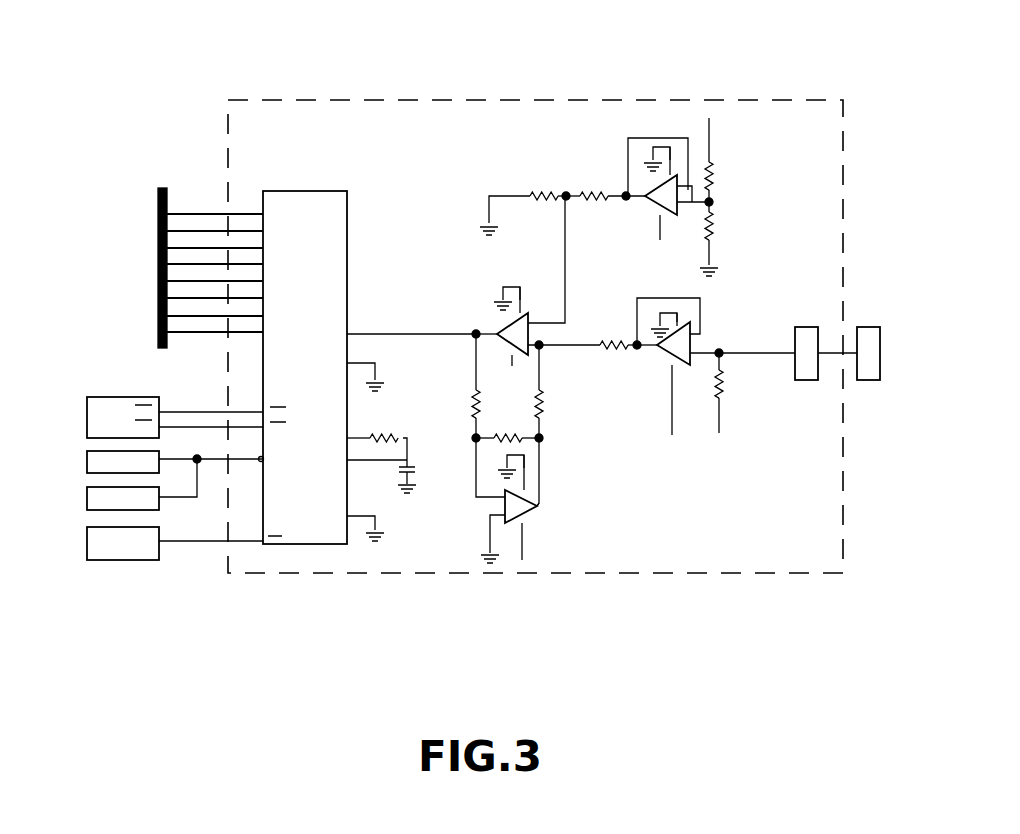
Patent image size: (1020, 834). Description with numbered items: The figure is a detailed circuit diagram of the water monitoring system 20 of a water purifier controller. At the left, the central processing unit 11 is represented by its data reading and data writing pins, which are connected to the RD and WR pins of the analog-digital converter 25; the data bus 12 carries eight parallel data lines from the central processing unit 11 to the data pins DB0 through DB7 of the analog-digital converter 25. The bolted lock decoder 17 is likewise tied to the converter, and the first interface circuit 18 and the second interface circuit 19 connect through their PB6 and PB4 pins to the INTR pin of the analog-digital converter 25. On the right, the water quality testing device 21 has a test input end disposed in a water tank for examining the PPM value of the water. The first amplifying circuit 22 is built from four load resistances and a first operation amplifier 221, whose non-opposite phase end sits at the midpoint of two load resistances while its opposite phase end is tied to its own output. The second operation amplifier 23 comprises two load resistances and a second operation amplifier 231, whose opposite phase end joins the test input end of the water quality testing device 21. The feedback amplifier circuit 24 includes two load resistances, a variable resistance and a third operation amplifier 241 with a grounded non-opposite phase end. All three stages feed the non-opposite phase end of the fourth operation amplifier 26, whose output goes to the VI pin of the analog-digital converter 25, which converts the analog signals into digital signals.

The central processing unit 11 is at (92, 412).
The data bus 12 is at (158, 196).
The bolted lock decoder 17 is at (100, 555).
The first interface circuit 18 is at (95, 458).
The second interface circuit 19 is at (92, 500).
The water monitoring system 20 is at (748, 100).
The water quality testing device 21 is at (806, 326).
The first amplifying circuit 22 is at (662, 118).
The second operation amplifier 23 is at (718, 300).
The feedback amplifier circuit 24 is at (566, 484).
The analog-digital converter 25 is at (313, 544).
The fourth operation amplifier 26 is at (497, 325).
The first operation amplifier 221 is at (640, 192).
The second operation amplifier 231 is at (667, 350).
The third operation amplifier 241 is at (537, 508).